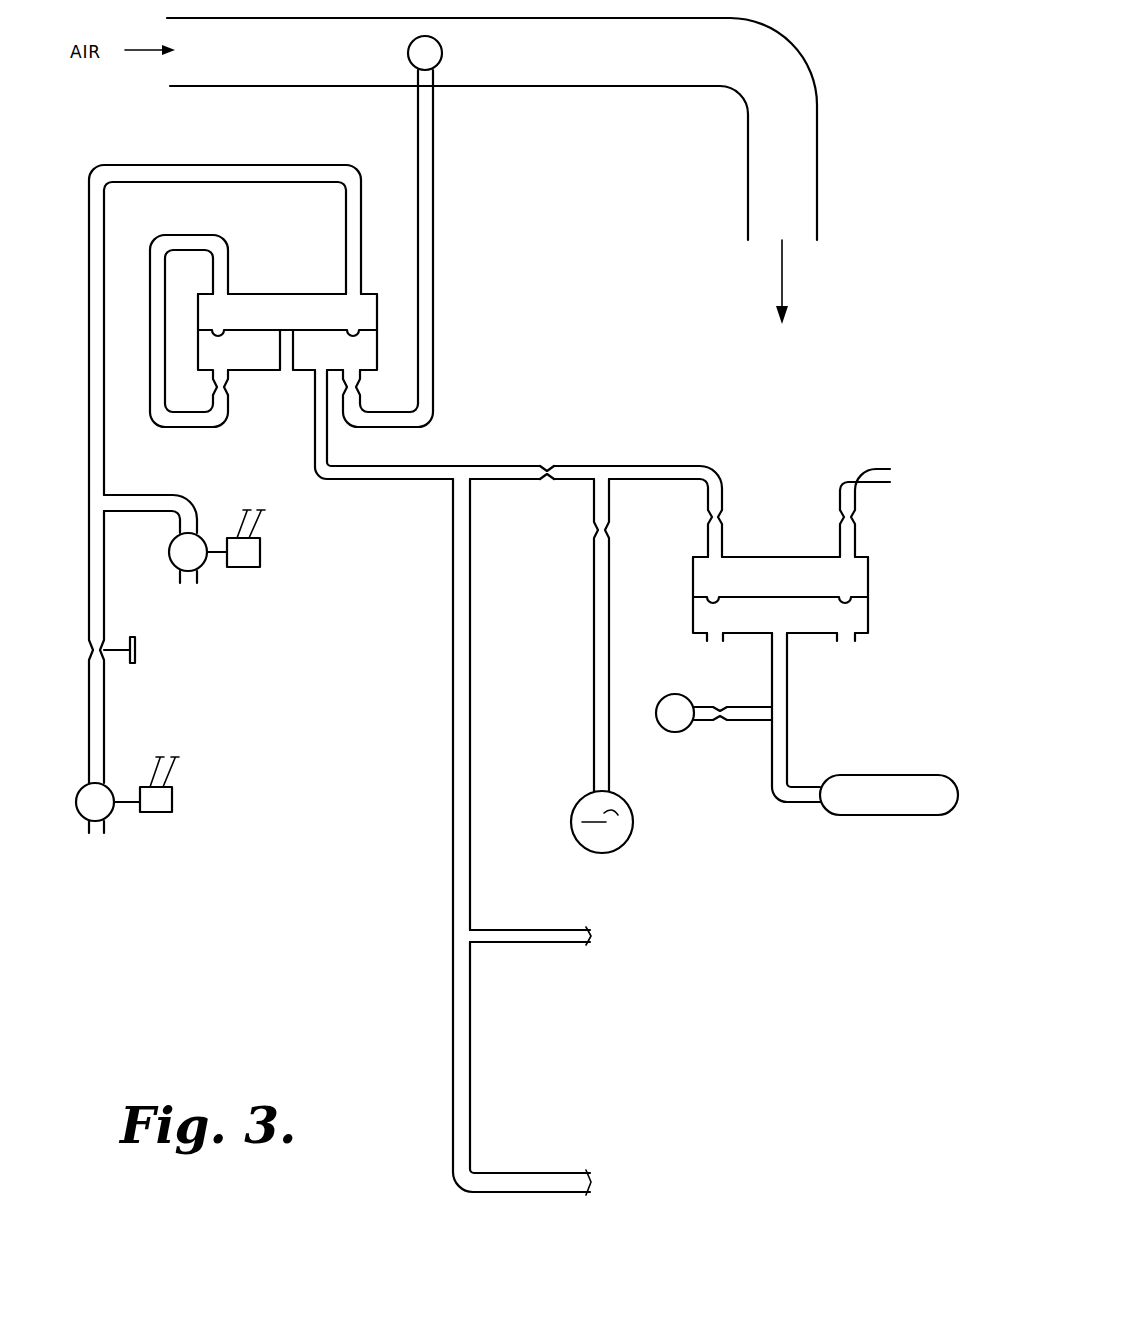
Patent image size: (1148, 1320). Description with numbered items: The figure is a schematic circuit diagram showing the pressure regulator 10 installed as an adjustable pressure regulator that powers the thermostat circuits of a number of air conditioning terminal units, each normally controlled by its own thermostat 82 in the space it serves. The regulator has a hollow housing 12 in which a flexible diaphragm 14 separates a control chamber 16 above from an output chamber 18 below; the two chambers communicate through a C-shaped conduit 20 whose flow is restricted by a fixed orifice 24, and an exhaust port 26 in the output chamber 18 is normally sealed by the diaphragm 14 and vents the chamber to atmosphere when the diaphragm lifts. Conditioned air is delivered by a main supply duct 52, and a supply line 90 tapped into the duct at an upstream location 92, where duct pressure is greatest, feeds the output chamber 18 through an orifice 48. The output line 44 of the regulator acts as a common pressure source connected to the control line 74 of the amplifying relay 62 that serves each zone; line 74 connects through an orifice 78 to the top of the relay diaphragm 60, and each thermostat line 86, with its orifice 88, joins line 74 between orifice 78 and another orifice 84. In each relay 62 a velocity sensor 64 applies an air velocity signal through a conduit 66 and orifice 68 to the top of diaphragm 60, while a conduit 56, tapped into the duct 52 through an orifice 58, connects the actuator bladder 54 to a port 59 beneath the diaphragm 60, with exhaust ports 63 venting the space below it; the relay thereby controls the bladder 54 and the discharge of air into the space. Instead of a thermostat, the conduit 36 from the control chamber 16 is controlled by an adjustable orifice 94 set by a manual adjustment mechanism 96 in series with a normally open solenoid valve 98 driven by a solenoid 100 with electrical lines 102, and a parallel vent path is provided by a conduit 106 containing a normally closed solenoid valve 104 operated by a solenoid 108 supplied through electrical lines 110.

The pressure regulator 10 is at (277, 236).
The hollow housing 12 is at (290, 296).
The flexible diaphragm 14 is at (306, 332).
The control chamber 16 is at (240, 302).
The output chamber 18 is at (250, 353).
The C-shaped conduit 20 is at (156, 418).
The fixed orifice 24 is at (215, 395).
The exhaust port 26 is at (288, 363).
The elongated conduit 36 is at (195, 170).
The output line 44 is at (366, 477).
The orifice 48 is at (357, 395).
The main supply duct 52 is at (763, 118).
The actuator bag or bladder 54 is at (832, 808).
The conduit 56 is at (782, 778).
The orifice 58 is at (722, 710).
The port 59 is at (778, 612).
The diaphragm 60 is at (838, 583).
The amplifying relay 62 is at (885, 597).
The exhaust ports 63 is at (711, 636).
The velocity sensor 64 is at (929, 444).
The conduit 66 is at (870, 472).
The orifice 68 is at (843, 516).
The control line 74 is at (683, 473).
The orifice 78 is at (720, 518).
The thermostat 82 is at (624, 838).
The orifice 84 is at (547, 470).
The thermostat line 86 is at (598, 658).
The orifice 88 is at (596, 536).
The supply line 90 is at (433, 213).
The upstream location 92 is at (417, 68).
The adjustable orifice 94 is at (90, 651).
The adjustment mechanism 96 is at (136, 636).
The normally open solenoid valve 98 is at (85, 806).
The solenoid 100 is at (162, 814).
The electrical lines 102 is at (155, 768).
The solenoid valve 104 is at (175, 557).
The conduit 106 is at (140, 500).
The solenoid 108 is at (250, 560).
The electrical lines 110 is at (257, 520).